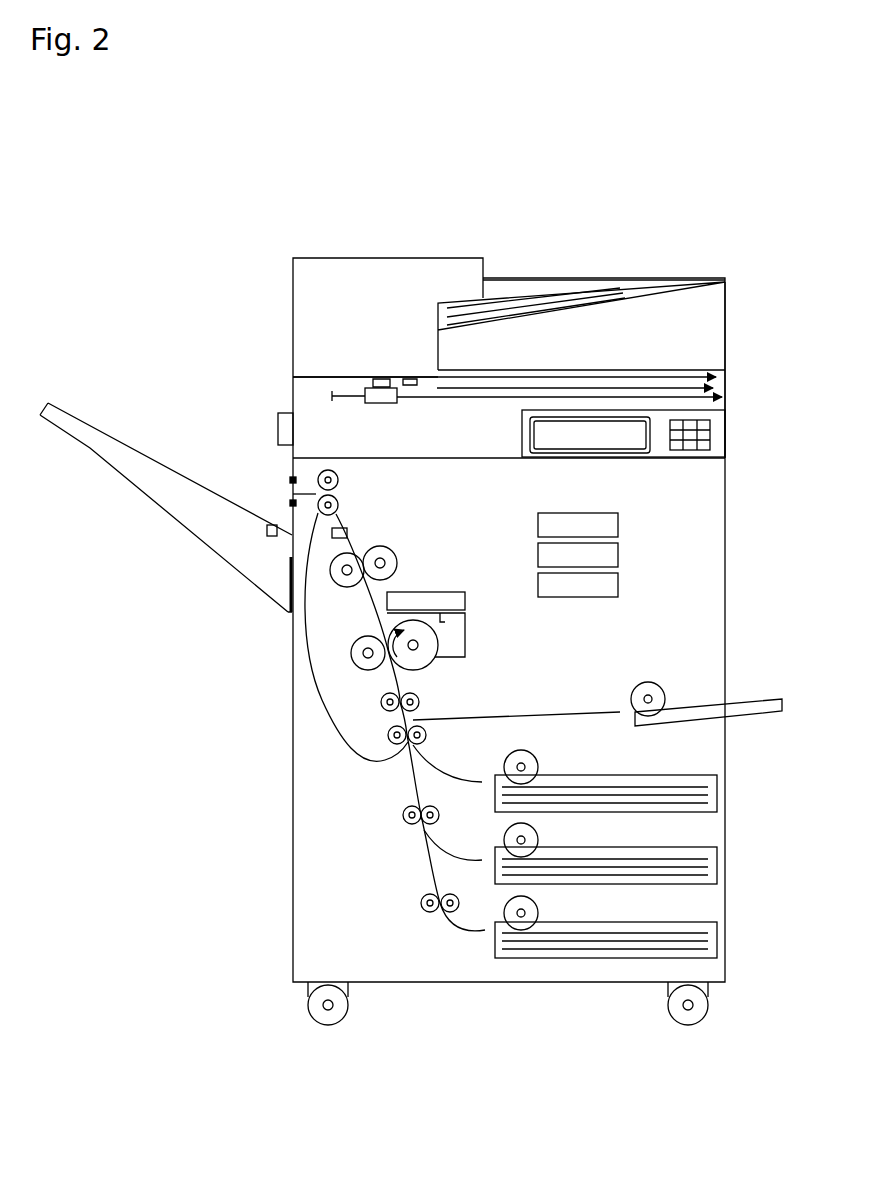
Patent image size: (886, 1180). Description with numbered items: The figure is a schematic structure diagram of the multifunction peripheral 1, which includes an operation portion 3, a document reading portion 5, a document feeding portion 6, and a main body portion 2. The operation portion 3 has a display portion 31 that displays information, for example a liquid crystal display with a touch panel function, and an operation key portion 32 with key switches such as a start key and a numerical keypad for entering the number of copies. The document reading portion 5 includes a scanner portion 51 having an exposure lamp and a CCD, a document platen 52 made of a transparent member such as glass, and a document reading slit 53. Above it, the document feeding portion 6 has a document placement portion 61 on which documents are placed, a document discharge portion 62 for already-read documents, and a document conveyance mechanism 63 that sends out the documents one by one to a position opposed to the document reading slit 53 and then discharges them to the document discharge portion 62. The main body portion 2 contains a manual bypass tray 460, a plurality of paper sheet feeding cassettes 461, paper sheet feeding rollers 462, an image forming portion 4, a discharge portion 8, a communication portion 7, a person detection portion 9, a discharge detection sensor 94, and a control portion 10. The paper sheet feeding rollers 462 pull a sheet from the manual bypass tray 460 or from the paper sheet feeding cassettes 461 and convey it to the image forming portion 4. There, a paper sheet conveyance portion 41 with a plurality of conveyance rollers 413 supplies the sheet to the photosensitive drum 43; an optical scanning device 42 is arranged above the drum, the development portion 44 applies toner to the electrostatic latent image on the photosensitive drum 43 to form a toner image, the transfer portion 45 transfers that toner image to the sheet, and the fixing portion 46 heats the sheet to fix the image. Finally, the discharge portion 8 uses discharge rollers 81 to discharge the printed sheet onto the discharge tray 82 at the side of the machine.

The multifunction peripheral 1 is at (116, 254).
The main body portion 2 is at (703, 633).
The operation portion 3 is at (522, 432).
The display portion 31 is at (588, 440).
The operation key portion 32 is at (682, 455).
The image forming portion 4 is at (340, 641).
The paper sheet conveyance portion 41 is at (398, 850).
The conveyance rollers 413 is at (425, 740).
The optical scanning device 42 is at (466, 598).
The photosensitive drum 43 is at (425, 665).
The development portion 44 is at (466, 637).
The transfer portion 45 is at (357, 664).
The fixing portion 46 is at (355, 595).
The manual bypass tray 460 is at (750, 720).
The paper sheet feeding cassettes 461 is at (712, 940).
The paper sheet feeding rollers 462 is at (655, 688).
The document reading portion 5 is at (318, 404).
The scanner portion 51 is at (380, 405).
The document platen 52 is at (727, 383).
The document reading slit 53 is at (386, 378).
The document feeding portion 6 is at (543, 278).
The document placement portion 61 is at (640, 292).
The document discharge portion 62 is at (660, 368).
The document conveyance mechanism 63 is at (343, 330).
The communication portion 7 is at (620, 522).
The discharge portion 8 is at (348, 466).
The discharge rollers 81 is at (316, 482).
The discharge tray 82 is at (180, 535).
The person detection portion 9 is at (620, 552).
The control portion 10 is at (620, 582).
The discharge detection sensor 94 is at (272, 525).